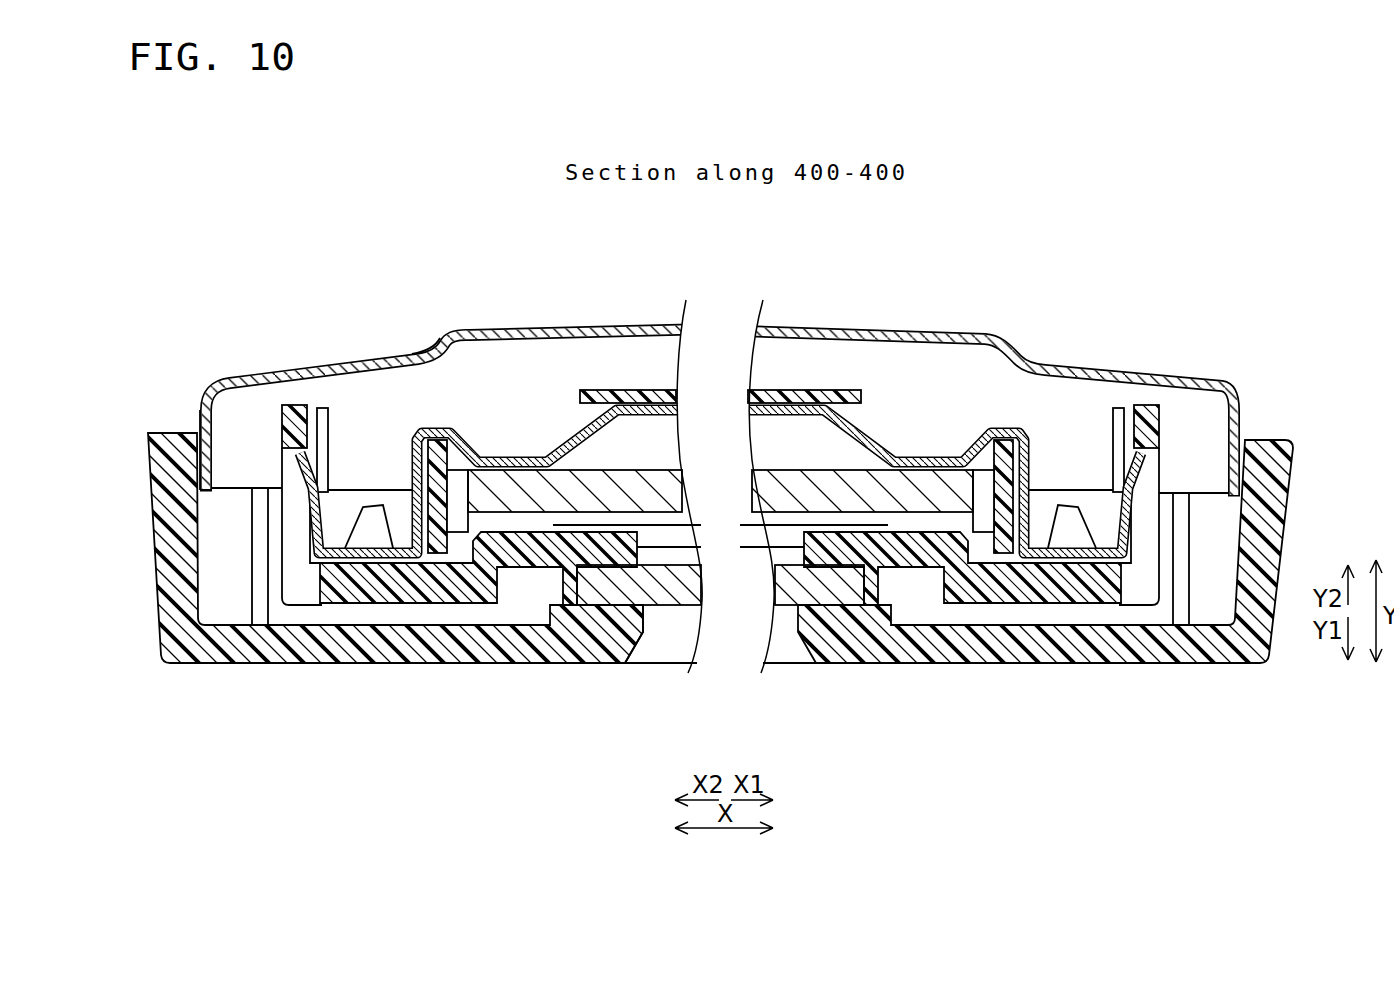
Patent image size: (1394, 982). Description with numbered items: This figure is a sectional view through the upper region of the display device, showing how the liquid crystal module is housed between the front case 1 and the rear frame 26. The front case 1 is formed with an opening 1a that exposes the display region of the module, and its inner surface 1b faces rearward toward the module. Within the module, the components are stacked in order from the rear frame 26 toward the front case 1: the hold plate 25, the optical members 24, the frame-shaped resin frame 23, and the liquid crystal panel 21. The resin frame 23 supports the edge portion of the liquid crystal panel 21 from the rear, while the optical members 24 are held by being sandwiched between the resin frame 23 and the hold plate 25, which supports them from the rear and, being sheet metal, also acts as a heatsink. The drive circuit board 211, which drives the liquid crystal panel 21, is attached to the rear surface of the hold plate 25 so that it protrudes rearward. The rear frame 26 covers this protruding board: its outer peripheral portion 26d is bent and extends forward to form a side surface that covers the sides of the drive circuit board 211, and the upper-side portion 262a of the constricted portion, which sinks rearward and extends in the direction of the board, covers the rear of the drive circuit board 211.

The front case 1 is at (243, 650).
The opening 1a is at (645, 608).
The inner surface 1b is at (322, 618).
The liquid crystal panel 21 is at (660, 600).
The drive circuit board 211 is at (605, 390).
The resin frame 23 is at (370, 598).
The optical members 24 is at (625, 478).
The hold plate 25 is at (520, 458).
The rear frame 26 is at (492, 329).
The outer peripheral portion 26d is at (200, 405).
The upper-side portion of the constricted portion 262a is at (440, 376).